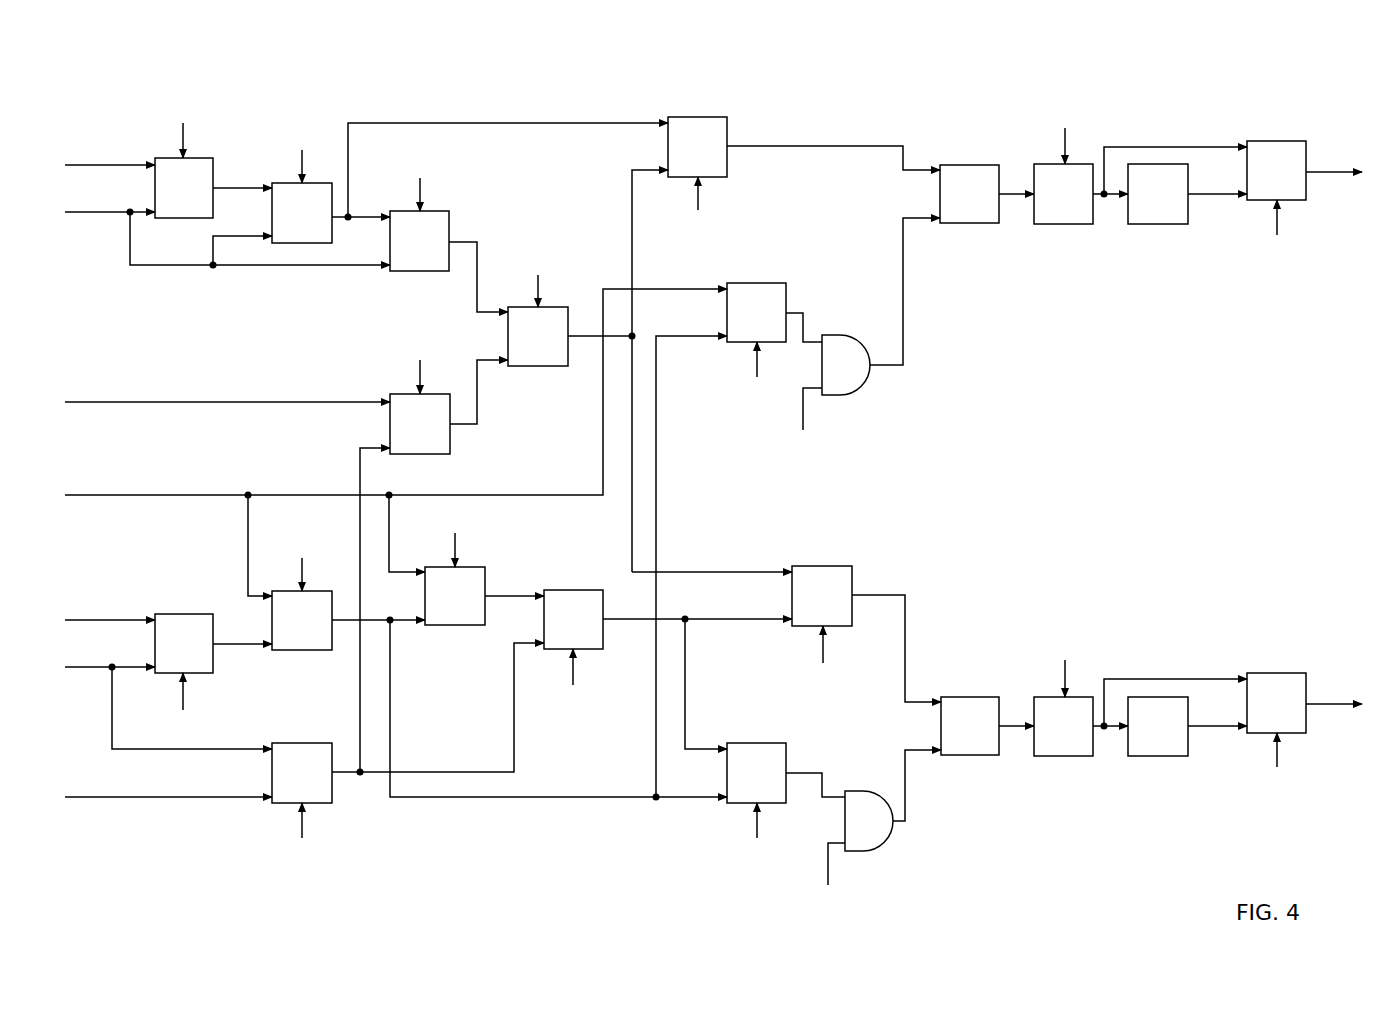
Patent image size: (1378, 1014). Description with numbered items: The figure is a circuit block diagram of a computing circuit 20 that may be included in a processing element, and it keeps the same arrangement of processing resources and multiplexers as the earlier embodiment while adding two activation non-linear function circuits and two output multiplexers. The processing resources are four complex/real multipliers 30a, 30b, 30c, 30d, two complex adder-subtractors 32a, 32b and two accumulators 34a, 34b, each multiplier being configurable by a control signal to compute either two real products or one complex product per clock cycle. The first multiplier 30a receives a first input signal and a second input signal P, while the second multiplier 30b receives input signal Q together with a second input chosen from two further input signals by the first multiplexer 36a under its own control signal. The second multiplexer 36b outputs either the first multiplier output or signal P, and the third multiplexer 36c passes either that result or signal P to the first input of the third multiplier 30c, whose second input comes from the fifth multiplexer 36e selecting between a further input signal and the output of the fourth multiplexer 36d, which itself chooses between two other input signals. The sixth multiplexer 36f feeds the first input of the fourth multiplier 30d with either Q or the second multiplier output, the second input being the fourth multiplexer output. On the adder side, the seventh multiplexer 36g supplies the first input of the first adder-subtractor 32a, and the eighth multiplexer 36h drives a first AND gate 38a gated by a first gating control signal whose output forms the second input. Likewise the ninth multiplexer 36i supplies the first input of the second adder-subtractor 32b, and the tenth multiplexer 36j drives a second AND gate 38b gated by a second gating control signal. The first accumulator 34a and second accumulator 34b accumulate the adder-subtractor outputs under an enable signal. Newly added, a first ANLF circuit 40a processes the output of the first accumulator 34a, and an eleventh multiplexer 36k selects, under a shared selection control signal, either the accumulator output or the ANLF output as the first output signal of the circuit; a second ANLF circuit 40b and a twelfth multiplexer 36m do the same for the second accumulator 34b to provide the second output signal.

The computing circuit 20 is at (900, 75).
The first multiplier 30a is at (184, 188).
The second multiplier 30b is at (302, 620).
The third multiplier 30c is at (538, 336).
The fourth multiplier 30d is at (573, 619).
The first adder-subtractor 32a is at (969, 194).
The second adder-subtractor 32b is at (970, 726).
The first accumulator 34a is at (1063, 194).
The second accumulator 34b is at (1063, 726).
The first multiplexer 36a is at (184, 643).
The second multiplexer 36b is at (302, 213).
The third multiplexer 36c is at (419, 241).
The fourth multiplexer 36d is at (302, 773).
The fifth multiplexer 36e is at (420, 424).
The sixth multiplexer 36f is at (455, 596).
The seventh multiplexer 36g is at (697, 147).
The eighth multiplexer 36h is at (756, 312).
The ninth multiplexer 36i is at (822, 596).
The tenth multiplexer 36j is at (756, 773).
The eleventh multiplexer 36k is at (1276, 170).
The twelfth multiplexer 36m is at (1276, 703).
The first AND gate 38a is at (846, 365).
The second AND gate 38b is at (869, 821).
The first ANLF circuit 40a is at (1158, 194).
The second ANLF circuit 40b is at (1158, 726).